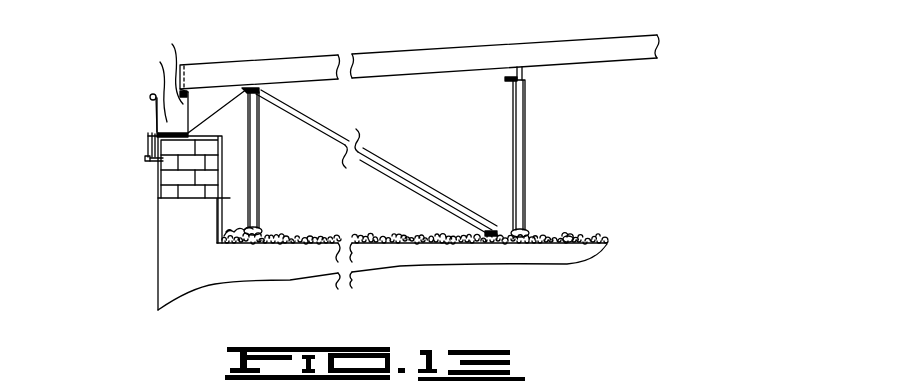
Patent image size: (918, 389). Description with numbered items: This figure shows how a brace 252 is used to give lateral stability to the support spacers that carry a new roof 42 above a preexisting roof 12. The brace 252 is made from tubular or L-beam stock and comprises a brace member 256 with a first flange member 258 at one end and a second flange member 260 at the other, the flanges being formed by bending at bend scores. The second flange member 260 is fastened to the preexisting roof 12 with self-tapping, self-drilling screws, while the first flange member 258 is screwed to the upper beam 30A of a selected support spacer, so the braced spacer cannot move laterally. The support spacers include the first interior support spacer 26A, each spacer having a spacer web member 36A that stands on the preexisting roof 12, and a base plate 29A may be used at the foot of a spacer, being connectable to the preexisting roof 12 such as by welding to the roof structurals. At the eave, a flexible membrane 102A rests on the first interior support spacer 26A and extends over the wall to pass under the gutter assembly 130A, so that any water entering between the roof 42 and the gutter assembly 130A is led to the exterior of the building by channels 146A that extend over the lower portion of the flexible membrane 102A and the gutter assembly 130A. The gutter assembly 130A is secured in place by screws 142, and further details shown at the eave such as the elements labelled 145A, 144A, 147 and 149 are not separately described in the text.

The roof 42 is at (417, 52).
The flexible membrane 102A is at (216, 119).
The gutter assembly 130A is at (141, 95).
The flashing 145A is at (172, 44).
The channels 146A is at (160, 62).
The flashing cap 144A is at (153, 114).
The bracket strip 147 is at (146, 145).
The screws 142 is at (144, 159).
The masonry wall 149 is at (220, 165).
The first spacer web member 36A is at (260, 193).
The first flange member 258 is at (260, 96).
The upper beam 30A is at (507, 78).
The brace 252 is at (358, 152).
The brace member 256 is at (393, 172).
The second flange member 260 is at (491, 231).
The first interior support spacer 26A is at (568, 182).
The base plate 29A is at (253, 245).
The preexisting roof 12 is at (573, 258).